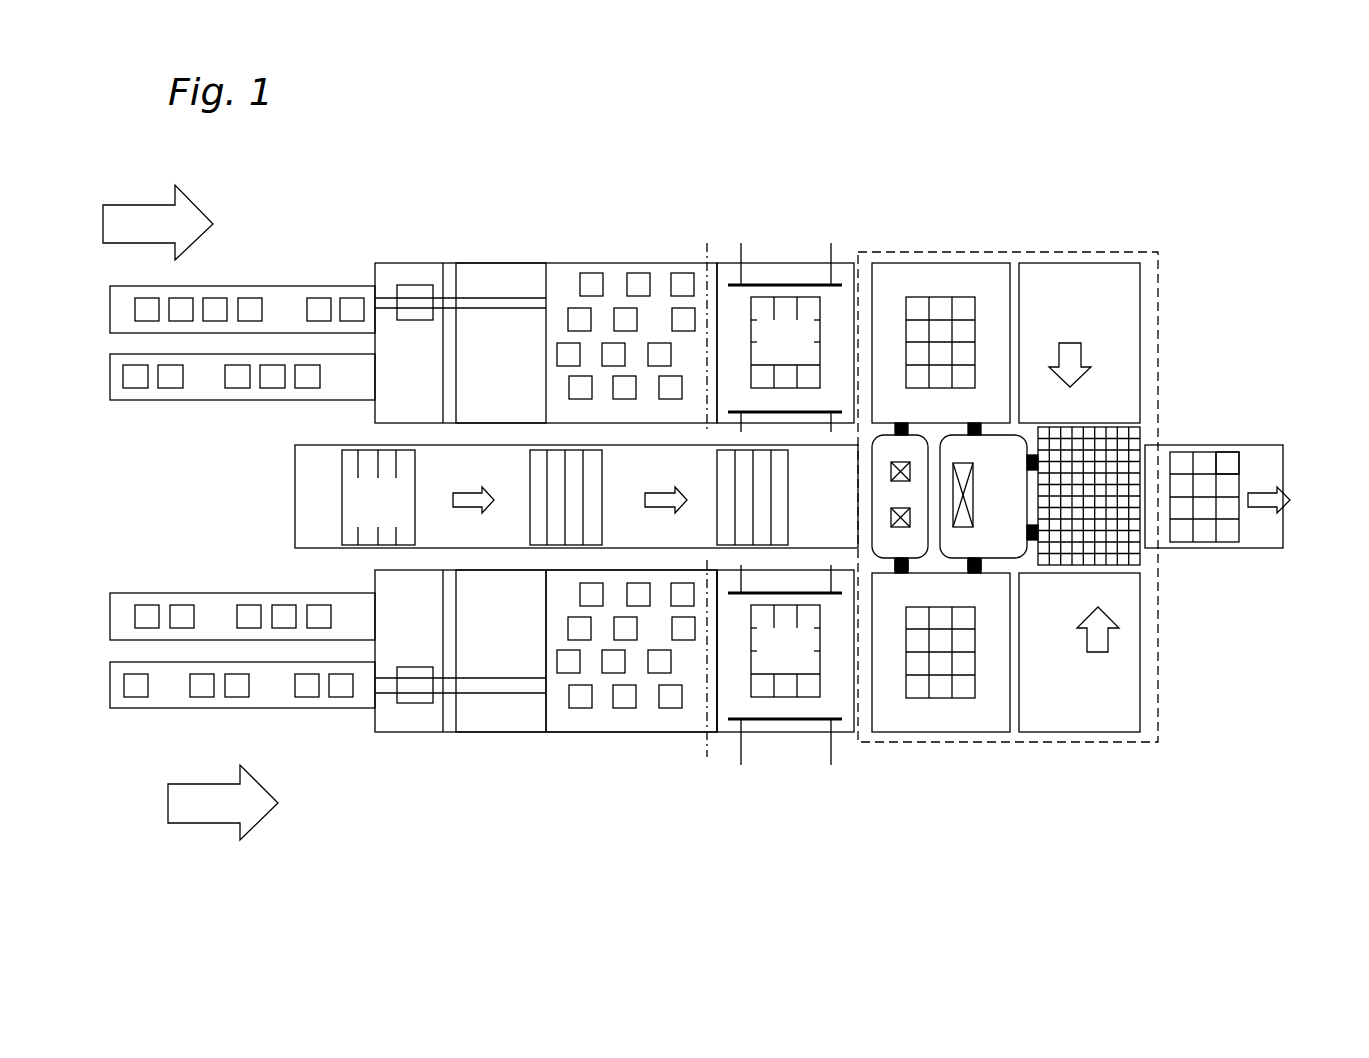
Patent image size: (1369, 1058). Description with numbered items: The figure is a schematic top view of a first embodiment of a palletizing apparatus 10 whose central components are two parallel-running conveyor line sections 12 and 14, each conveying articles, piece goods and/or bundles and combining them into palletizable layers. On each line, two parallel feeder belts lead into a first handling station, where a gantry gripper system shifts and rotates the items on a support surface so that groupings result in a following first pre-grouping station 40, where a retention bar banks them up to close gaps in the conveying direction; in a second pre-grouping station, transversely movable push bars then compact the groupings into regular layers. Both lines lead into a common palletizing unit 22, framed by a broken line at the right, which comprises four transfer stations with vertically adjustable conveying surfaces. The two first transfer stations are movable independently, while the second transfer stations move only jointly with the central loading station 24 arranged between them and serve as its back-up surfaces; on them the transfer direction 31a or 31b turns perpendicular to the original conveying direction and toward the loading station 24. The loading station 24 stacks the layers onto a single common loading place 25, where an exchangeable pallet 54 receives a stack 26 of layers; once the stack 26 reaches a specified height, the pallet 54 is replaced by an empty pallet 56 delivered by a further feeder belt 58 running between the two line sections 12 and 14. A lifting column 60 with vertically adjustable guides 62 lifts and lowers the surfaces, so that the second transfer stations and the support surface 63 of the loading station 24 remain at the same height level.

The palletizing apparatus 10 is at (1138, 168).
The first conveyor line section 12 is at (416, 820).
The second conveyor line section 14 is at (417, 200).
The palletizing unit 22 is at (968, 755).
The central loading station 24 is at (1152, 427).
The loading place 25 is at (1282, 462).
The stack 26 is at (1240, 460).
The transfer direction 31a is at (1070, 355).
The transfer direction 31b is at (1103, 648).
The first pre-grouping station 40 is at (628, 755).
The pallet 54 is at (1250, 549).
The empty pallet 56 is at (390, 515).
The further feeder belt 58 is at (310, 482).
The lifting column 60 is at (1032, 428).
The vertically adjustable guides 62 is at (907, 573).
The support surface of the loading station 63 is at (1132, 546).